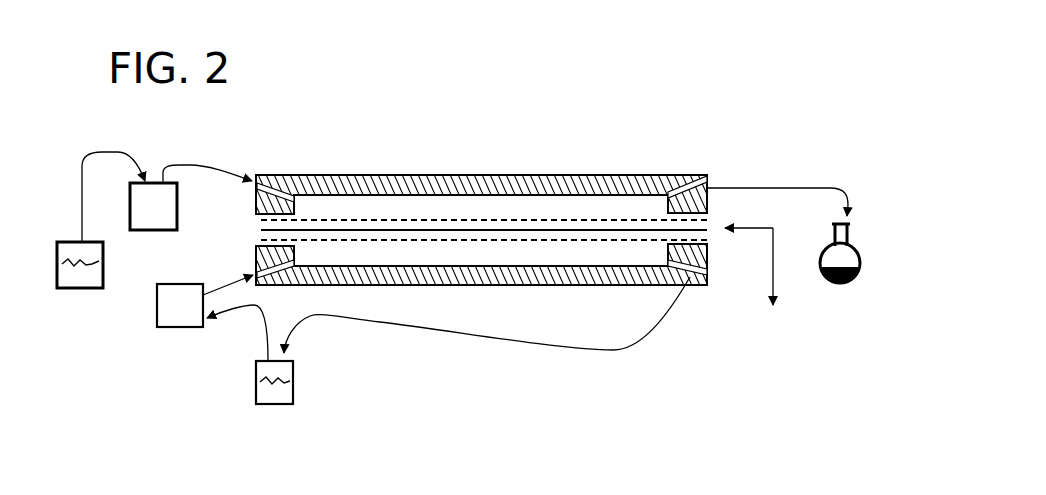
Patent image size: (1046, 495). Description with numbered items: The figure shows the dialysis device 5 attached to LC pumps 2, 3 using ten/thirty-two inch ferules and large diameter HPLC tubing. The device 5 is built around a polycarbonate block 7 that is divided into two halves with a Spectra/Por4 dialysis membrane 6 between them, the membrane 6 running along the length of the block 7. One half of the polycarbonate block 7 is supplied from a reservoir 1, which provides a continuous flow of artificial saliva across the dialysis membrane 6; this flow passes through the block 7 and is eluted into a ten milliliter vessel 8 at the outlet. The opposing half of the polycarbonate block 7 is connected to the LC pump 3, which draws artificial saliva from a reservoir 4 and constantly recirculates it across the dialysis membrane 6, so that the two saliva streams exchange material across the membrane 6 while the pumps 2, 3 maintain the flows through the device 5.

The reservoir 1 is at (98, 235).
The LC pump 2 is at (191, 211).
The LC pump 3 is at (205, 315).
The reservoir 4 is at (448, 355).
The tubular reactor body 5 is at (252, 217).
The dialysis membrane 6 is at (755, 283).
The polycarbonate block 7 is at (704, 174).
The vessel 8 is at (850, 253).